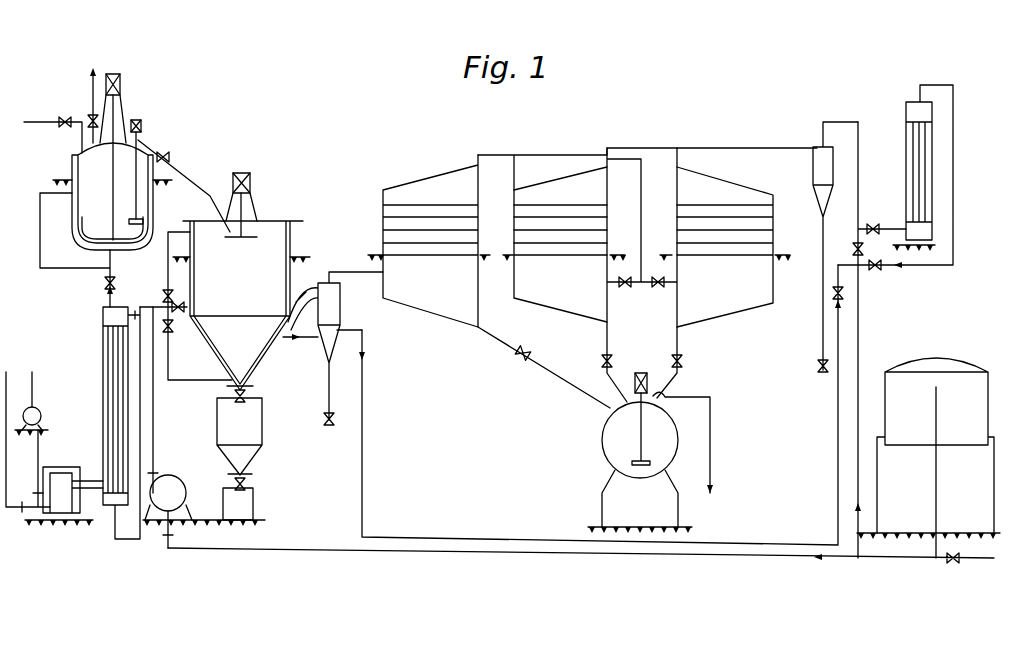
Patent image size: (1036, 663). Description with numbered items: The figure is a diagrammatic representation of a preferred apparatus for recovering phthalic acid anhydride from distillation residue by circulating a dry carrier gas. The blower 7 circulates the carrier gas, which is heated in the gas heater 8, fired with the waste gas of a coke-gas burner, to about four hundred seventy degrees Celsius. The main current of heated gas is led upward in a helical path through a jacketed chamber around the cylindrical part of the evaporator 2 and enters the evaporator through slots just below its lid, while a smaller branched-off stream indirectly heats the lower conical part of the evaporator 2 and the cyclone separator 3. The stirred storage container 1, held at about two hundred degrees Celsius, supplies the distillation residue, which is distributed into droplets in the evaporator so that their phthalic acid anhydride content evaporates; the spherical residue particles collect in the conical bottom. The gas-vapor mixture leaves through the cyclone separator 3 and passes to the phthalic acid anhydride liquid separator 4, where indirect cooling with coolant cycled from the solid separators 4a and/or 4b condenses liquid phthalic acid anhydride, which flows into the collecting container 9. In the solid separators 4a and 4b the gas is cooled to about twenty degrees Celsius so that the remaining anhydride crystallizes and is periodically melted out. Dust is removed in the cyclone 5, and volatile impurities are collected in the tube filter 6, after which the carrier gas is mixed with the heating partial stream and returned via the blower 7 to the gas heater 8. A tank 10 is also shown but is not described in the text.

The storage container 1 is at (88, 187).
The evaporator 2 is at (221, 287).
The cyclone separator 3 is at (336, 300).
The phthalic acid anhydride liquid separator 4 is at (430, 241).
The phthalic acid anhydride solid separator 4a is at (560, 231).
The phthalic acid anhydride solid separator 4b is at (725, 247).
The cyclone 5 is at (813, 172).
The tube filter 6 is at (913, 165).
The blower 7 is at (177, 480).
The gas heater 8 is at (105, 470).
The collecting container 9 is at (657, 450).
The storage tank 10 is at (935, 458).